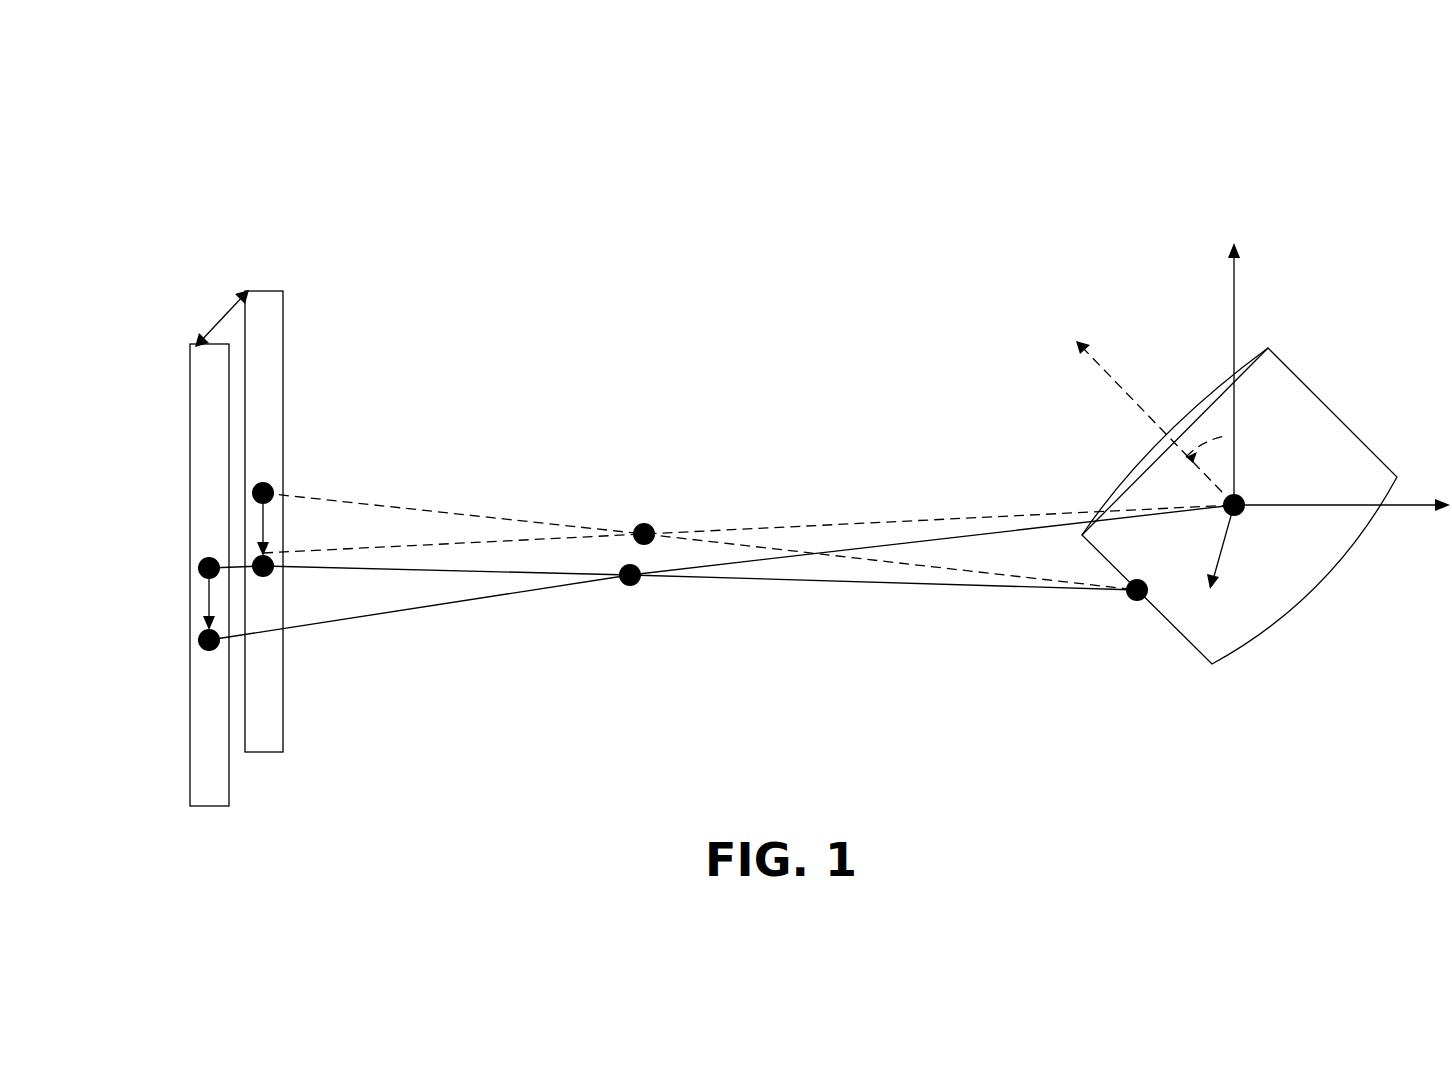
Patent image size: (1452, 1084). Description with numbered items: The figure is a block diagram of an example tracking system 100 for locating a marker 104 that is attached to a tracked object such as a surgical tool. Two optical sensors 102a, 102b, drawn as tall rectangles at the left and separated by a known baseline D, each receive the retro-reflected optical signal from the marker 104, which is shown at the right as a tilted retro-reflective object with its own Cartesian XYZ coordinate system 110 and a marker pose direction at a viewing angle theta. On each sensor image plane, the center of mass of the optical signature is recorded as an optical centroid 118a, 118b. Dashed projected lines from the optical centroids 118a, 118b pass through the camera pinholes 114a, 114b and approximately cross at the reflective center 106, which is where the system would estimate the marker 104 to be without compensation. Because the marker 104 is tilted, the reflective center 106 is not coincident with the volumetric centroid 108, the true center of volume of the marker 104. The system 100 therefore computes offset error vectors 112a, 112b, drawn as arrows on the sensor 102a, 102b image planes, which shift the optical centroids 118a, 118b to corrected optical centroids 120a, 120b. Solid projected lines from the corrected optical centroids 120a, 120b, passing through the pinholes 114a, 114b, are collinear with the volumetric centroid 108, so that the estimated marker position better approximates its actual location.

The tracking system 100 is at (252, 200).
The optical sensor 102a is at (190, 498).
The optical sensor 102b is at (283, 380).
The marker 104 is at (1115, 487).
The reflective center 106 is at (1129, 562).
The volumetric centroid 108 is at (1248, 525).
The coordinate system 110 is at (1203, 256).
The offset error vector 112a is at (206, 598).
The offset error vector 112b is at (266, 543).
The camera pinhole 114a is at (627, 600).
The camera pinhole 114b is at (645, 512).
The optical centroid 118a is at (200, 566).
The optical centroid 118b is at (383, 484).
The corrected optical centroid 120a is at (198, 646).
The corrected optical centroid 120b is at (268, 578).